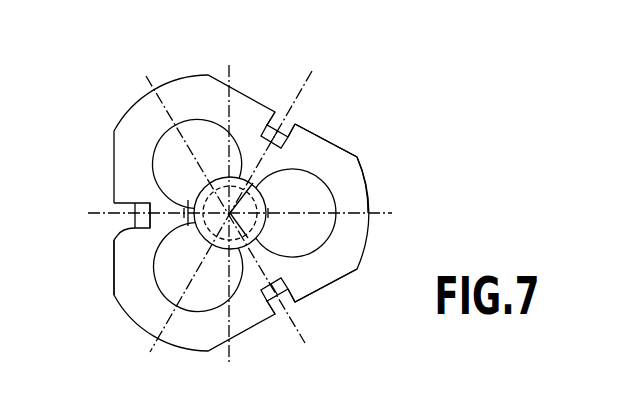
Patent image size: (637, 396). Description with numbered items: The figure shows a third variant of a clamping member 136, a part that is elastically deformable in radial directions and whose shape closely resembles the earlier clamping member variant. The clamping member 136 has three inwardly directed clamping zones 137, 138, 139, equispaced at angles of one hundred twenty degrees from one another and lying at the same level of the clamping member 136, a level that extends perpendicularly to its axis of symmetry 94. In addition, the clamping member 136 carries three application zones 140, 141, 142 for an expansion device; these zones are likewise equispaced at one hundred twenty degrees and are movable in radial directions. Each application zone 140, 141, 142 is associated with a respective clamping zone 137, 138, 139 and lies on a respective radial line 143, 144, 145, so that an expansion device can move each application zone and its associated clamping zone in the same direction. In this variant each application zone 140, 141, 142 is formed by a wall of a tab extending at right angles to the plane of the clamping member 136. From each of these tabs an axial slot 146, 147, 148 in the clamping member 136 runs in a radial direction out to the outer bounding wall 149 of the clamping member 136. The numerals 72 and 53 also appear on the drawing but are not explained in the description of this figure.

The clamping member 136 is at (358, 138).
The application zone 142 is at (266, 124).
The radial line 145 is at (302, 86).
The axial slot 148 is at (296, 122).
The outer bounding wall 149 is at (368, 187).
The application zone 140 is at (315, 297).
The radial line 143 is at (303, 336).
The axial slot 146 is at (290, 305).
The axial slot 147 is at (108, 201).
The radial line 144 is at (88, 206).
The application zone 141 is at (115, 238).
The upper left roller 72 is at (197, 163).
The lower left roller 53 is at (230, 213).
The axis of symmetry 94 is at (262, 200).
The clamping zone 139 is at (230, 213).
The clamping zone 137 is at (262, 241).
The clamping zone 138 is at (230, 213).